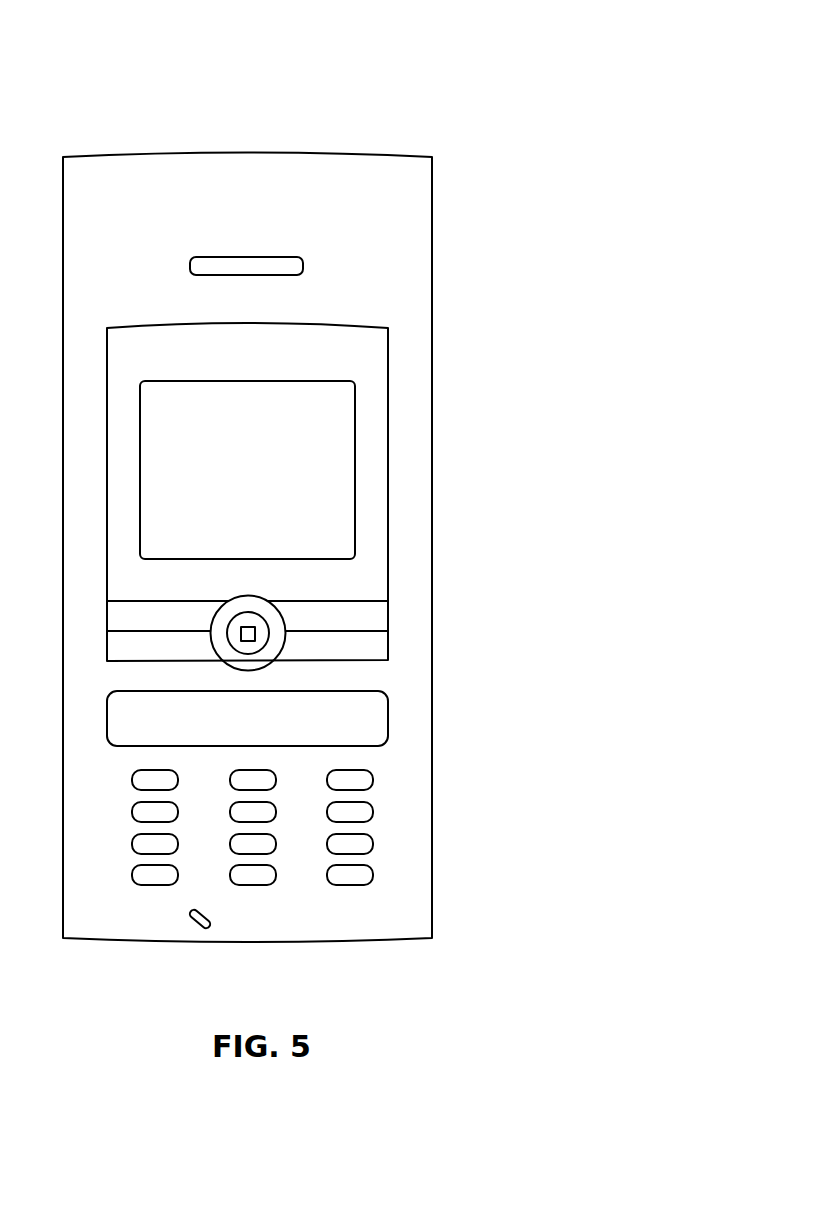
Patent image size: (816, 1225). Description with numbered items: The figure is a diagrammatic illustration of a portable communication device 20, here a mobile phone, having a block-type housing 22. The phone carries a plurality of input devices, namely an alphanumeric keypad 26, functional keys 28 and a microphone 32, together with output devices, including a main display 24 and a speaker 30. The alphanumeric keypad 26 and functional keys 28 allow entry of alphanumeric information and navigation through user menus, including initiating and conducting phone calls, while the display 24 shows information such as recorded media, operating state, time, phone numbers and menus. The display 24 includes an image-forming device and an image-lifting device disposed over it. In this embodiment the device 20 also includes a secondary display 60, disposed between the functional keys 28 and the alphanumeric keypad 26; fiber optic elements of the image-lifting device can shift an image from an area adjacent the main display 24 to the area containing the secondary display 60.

The portable communication device 20 is at (443, 128).
The housing 22 is at (418, 244).
The display 24 is at (247, 470).
The alphanumeric keypad 26 is at (402, 810).
The functional keys 28 is at (407, 629).
The speaker 30 is at (233, 257).
The microphone 32 is at (210, 921).
The secondary display 60 is at (388, 710).